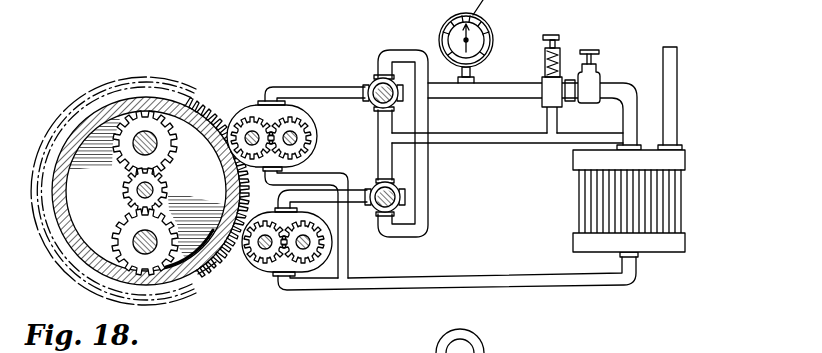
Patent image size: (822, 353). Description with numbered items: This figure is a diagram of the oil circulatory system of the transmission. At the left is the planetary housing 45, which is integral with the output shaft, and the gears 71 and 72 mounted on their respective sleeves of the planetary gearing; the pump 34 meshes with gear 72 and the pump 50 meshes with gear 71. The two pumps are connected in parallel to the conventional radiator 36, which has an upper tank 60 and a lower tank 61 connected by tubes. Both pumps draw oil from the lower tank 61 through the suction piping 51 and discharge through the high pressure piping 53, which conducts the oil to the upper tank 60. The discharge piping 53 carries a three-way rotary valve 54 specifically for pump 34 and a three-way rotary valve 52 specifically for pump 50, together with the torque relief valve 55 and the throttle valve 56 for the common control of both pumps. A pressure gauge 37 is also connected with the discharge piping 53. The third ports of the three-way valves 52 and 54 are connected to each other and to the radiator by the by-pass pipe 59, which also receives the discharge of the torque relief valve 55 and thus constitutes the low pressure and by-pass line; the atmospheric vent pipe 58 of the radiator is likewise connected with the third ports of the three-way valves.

The pump 34 is at (252, 109).
The radiator 36 is at (675, 208).
The pressure gauge 37 is at (466, 352).
The planetary housing 45 is at (63, 232).
The pump 50 is at (259, 271).
The suction piping 51 is at (522, 275).
The three-way rotary valve 52 is at (400, 198).
The discharge piping 53 is at (323, 91).
The three-way rotary valve 54 is at (375, 83).
The torque relief valve 55 is at (557, 38).
The throttle valve 56 is at (593, 55).
The atmospheric vent pipe 58 is at (677, 72).
The by-pass pipe 59 is at (390, 138).
The upper tank 60 is at (677, 163).
The lower tank 61 is at (683, 249).
The gear 71 is at (223, 278).
The gear 72 is at (186, 99).